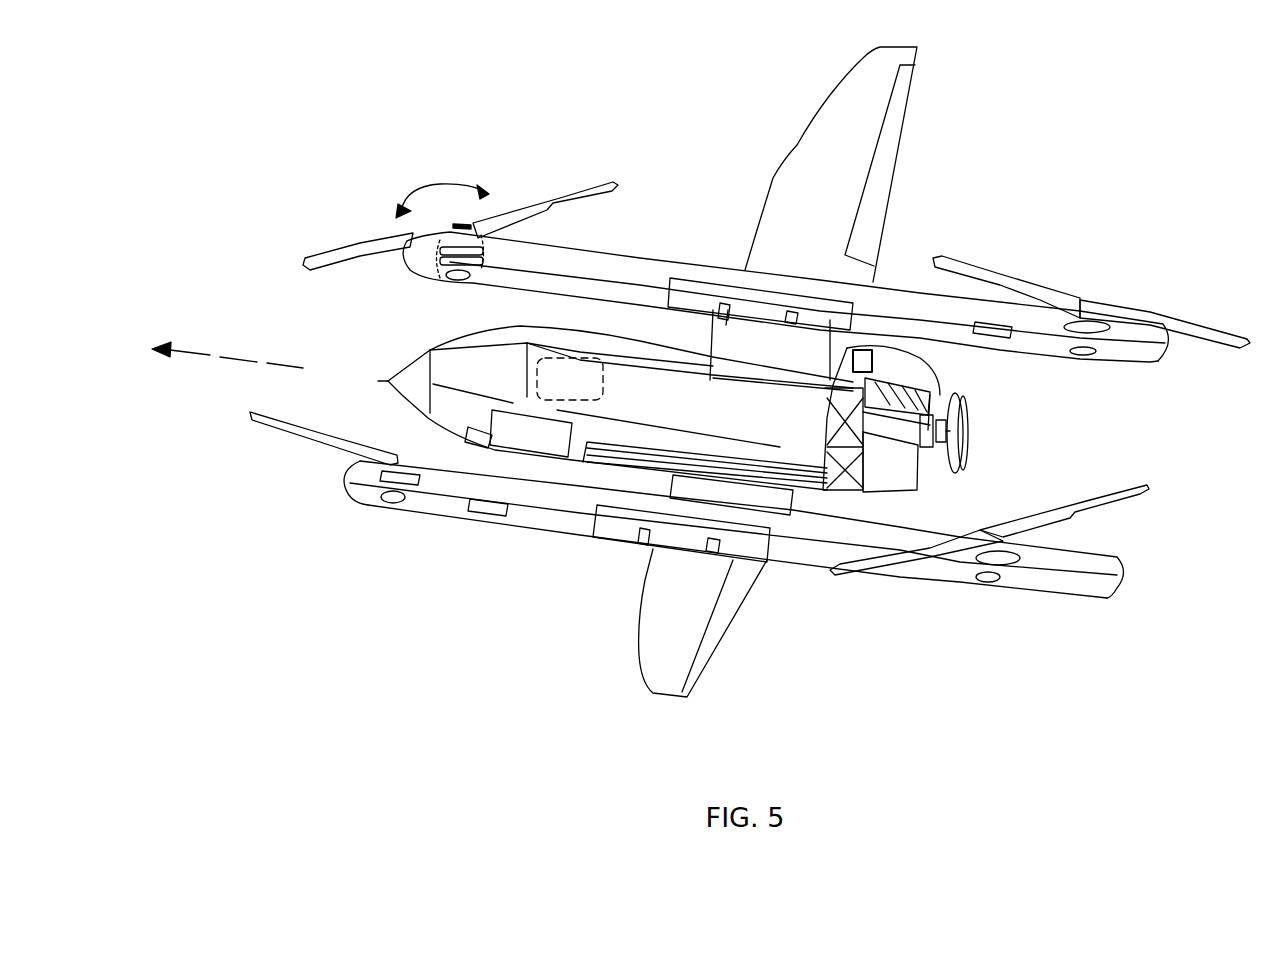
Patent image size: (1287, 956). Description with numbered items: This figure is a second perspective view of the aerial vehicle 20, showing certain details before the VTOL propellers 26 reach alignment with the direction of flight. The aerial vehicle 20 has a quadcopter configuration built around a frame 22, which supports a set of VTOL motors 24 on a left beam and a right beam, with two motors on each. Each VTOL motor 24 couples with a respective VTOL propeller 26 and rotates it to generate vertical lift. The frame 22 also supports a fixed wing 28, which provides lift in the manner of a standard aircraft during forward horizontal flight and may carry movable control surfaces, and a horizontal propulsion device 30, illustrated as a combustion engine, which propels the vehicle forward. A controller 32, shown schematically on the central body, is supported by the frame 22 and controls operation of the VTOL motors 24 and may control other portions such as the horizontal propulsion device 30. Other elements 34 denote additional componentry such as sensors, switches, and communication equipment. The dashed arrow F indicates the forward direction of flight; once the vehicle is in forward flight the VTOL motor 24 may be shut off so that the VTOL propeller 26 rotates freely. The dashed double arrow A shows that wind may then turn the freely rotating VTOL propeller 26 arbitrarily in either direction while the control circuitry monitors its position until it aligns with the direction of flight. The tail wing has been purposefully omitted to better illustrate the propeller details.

The aerial vehicle 20 is at (549, 93).
The frame 22 is at (441, 413).
The VTOL motor 24 is at (447, 277).
The VTOL propeller 26 is at (583, 200).
The fixed wing 28 is at (797, 145).
The horizontal propulsion device 30 is at (932, 487).
The controller 32 is at (558, 390).
The other elements 34 is at (522, 480).
The dashed double arrow A is at (433, 185).
The direction of flight arrow F is at (210, 355).